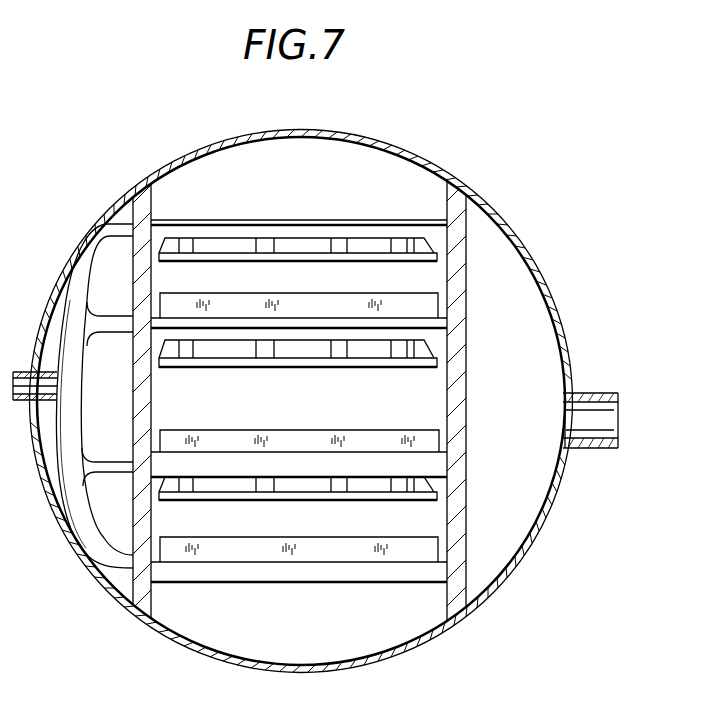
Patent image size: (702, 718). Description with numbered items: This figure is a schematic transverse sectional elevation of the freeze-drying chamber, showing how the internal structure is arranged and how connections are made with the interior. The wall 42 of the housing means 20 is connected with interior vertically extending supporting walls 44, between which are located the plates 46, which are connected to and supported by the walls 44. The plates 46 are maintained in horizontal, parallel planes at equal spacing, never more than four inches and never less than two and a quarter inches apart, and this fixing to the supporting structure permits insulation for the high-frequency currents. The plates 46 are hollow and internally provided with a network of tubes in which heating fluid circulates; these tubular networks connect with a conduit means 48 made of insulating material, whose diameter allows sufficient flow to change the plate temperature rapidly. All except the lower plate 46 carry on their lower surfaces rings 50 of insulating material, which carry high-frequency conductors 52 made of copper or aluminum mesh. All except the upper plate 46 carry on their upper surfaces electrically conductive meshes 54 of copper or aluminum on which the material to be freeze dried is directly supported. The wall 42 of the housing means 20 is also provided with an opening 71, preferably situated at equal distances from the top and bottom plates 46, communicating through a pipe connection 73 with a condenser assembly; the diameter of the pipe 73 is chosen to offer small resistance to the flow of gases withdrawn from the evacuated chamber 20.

The housing means 20 is at (446, 163).
The wall 42 is at (437, 162).
The supporting walls 44 is at (466, 228).
The plates 46 is at (274, 221).
The conduit means 48 is at (98, 542).
The rings 50 is at (370, 246).
The high-frequency conductors 52 is at (300, 263).
The electrically conductive meshes 54 is at (440, 302).
The opening 71 is at (566, 395).
The pipe connection 73 is at (593, 393).